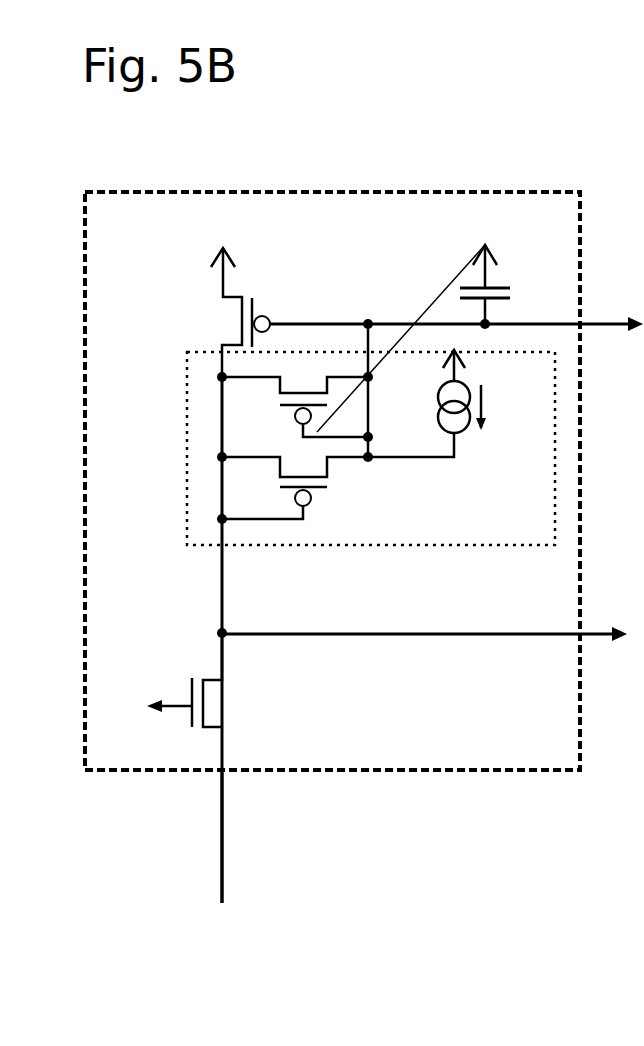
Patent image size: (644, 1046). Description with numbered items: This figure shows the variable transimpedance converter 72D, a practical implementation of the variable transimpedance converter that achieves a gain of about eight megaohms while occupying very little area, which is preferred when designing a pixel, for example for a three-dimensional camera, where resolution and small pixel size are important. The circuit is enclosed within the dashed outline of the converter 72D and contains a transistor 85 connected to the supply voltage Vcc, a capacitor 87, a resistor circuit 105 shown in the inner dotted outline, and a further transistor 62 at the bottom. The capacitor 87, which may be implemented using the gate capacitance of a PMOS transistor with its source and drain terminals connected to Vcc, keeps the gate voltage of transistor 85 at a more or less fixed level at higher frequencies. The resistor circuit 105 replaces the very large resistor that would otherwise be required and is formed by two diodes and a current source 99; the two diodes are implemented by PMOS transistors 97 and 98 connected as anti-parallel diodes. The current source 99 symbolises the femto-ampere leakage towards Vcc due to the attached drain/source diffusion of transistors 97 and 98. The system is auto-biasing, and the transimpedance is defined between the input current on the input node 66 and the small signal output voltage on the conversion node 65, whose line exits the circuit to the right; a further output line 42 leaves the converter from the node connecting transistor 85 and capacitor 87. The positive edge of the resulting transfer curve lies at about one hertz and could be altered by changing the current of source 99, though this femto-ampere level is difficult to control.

The variable transimpedance converter 72D is at (376, 191).
The transistor 85 is at (224, 323).
The capacitor 87 is at (442, 288).
The output line 42 is at (614, 330).
The PMOS transistor 97 is at (280, 390).
The PMOS transistor 98 is at (328, 478).
The current source 99 is at (488, 398).
The resistor circuit 105 is at (186, 520).
The conversion node 65 is at (452, 637).
The NMOS transistor 62 is at (187, 722).
The input node 66 is at (224, 882).